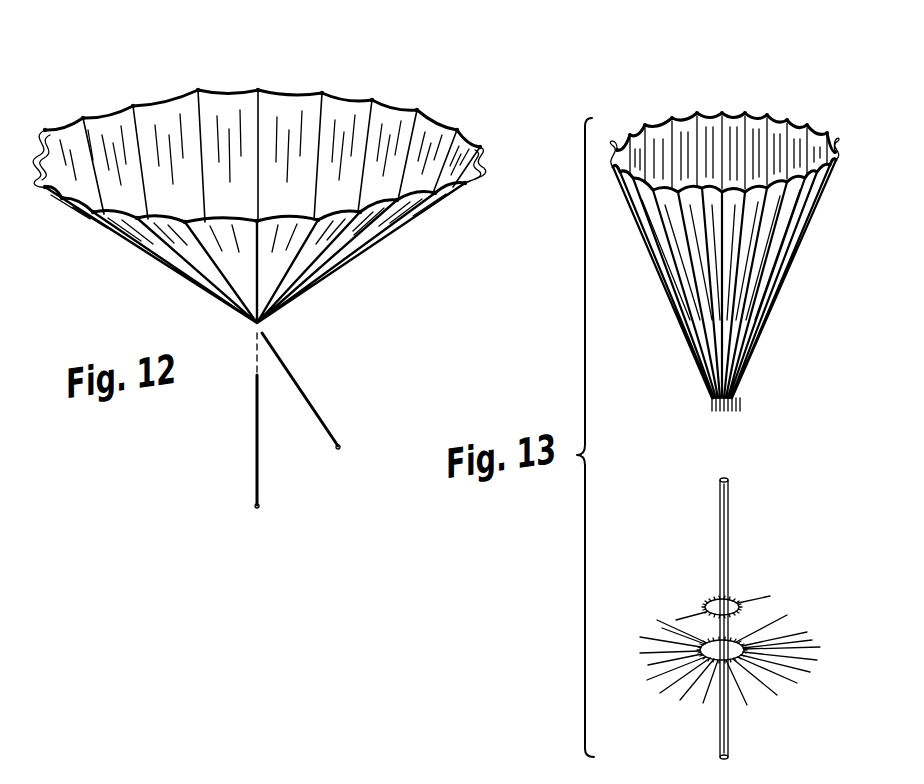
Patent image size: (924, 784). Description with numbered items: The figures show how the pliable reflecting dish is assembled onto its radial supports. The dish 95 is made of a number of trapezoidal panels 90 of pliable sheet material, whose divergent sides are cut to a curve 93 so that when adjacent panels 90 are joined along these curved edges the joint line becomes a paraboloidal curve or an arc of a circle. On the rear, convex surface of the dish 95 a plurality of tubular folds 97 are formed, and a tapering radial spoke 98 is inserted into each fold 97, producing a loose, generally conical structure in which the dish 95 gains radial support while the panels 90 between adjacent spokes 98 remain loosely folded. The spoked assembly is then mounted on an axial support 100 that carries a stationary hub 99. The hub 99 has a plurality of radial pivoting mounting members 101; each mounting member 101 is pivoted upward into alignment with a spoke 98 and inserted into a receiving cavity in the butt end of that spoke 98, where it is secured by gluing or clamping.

In FIG. 12, the trapezoidal panel 90 is at (210, 110).
In FIG. 13, the trapezoidal panel 90 is at (685, 160).
In FIG. 12, the curve 93 is at (410, 153).
In FIG. 12, the dish 95 is at (268, 125).
In FIG. 13, the dish 95 is at (722, 145).
In FIG. 12, the fold 97 is at (38, 165).
In FIG. 13, the fold 97 is at (763, 305).
In FIG. 12, the radial spoke 98 is at (255, 435).
In FIG. 13, the hub 99 is at (730, 601).
In FIG. 13, the axial support 100 is at (729, 518).
In FIG. 13, the mounting member 101 is at (705, 615).